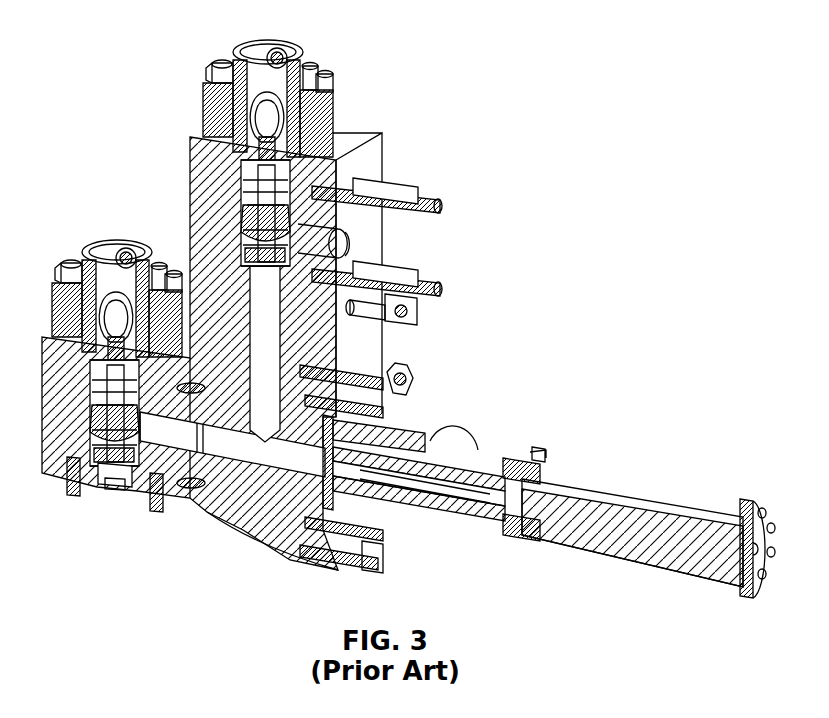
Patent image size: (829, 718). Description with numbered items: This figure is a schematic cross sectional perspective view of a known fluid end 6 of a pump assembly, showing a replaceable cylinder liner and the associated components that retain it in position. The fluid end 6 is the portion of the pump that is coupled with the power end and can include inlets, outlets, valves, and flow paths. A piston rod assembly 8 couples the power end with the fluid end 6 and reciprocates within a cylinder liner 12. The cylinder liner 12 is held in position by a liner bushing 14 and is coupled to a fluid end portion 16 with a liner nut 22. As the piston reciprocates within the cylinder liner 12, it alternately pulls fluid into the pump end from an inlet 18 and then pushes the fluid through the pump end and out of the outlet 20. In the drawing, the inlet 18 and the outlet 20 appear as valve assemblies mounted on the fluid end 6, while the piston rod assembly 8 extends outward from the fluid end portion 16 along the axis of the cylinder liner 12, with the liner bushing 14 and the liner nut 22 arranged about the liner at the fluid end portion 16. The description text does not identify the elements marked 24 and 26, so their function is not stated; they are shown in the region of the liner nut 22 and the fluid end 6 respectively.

The fluid end 6 is at (140, 62).
The piston rod assembly 8 is at (616, 495).
The cylinder liner 12 is at (413, 553).
The liner bushing 14 is at (337, 562).
The fluid end portion 16 is at (257, 513).
The inlet 18 is at (107, 475).
The outlet 20 is at (260, 45).
The liner nut 22 is at (400, 408).
The bonnet 24 is at (417, 413).
The stem passage 26 is at (282, 412).